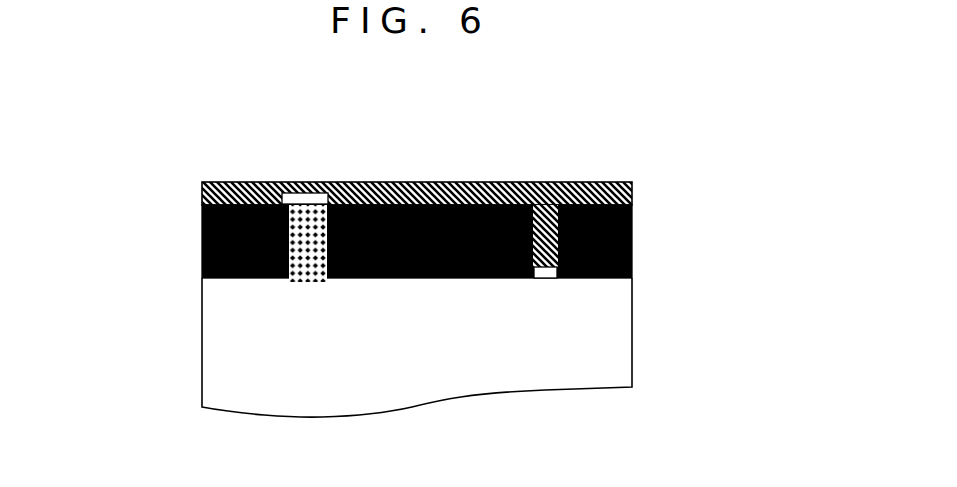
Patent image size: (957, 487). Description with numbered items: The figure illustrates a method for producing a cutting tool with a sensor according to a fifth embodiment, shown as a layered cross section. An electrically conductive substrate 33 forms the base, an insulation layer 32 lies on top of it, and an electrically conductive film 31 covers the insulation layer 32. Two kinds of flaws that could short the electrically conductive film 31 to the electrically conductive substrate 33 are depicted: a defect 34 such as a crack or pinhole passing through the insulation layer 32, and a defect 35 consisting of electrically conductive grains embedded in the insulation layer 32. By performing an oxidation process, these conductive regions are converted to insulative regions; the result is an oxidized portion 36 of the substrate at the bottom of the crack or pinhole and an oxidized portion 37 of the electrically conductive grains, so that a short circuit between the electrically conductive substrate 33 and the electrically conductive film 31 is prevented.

The electrically conductive film 31 is at (202, 195).
The insulation layer 32 is at (202, 243).
The electrically conductive substrate 33 is at (202, 335).
The defect 34 is at (555, 200).
The defect 35 is at (313, 292).
The oxidized portion of the substrate 36 is at (549, 281).
The oxidized portion of the electrically conductive grains 37 is at (314, 184).